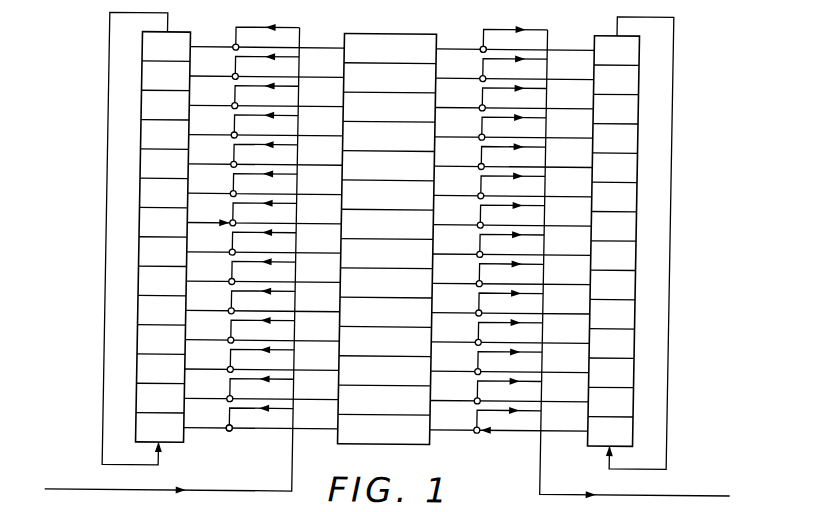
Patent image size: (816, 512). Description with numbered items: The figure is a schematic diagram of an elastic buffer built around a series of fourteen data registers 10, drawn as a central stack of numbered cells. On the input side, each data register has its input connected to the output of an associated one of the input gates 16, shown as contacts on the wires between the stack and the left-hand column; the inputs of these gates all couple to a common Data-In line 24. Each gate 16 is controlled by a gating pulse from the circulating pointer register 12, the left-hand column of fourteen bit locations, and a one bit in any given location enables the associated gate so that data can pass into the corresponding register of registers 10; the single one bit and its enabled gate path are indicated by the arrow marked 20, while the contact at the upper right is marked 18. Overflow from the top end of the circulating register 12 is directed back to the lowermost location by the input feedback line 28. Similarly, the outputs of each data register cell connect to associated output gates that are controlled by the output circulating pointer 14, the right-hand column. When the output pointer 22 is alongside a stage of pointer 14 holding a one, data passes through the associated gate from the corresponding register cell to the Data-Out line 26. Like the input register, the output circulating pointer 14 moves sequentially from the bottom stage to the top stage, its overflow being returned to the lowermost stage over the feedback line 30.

The data registers 10 is at (372, 33).
The circulating pointer register 12 is at (139, 77).
The output circulating pointer 14 is at (636, 80).
The input gates 16 is at (232, 434).
The output switch contact 18 is at (483, 46).
The selected input path arrow 20 is at (204, 224).
The output pointer 22 is at (571, 431).
The Data-In line 24 is at (234, 492).
The Data-Out line 26 is at (544, 467).
The input feedback line 28 is at (106, 345).
The feedback line 30 is at (670, 208).